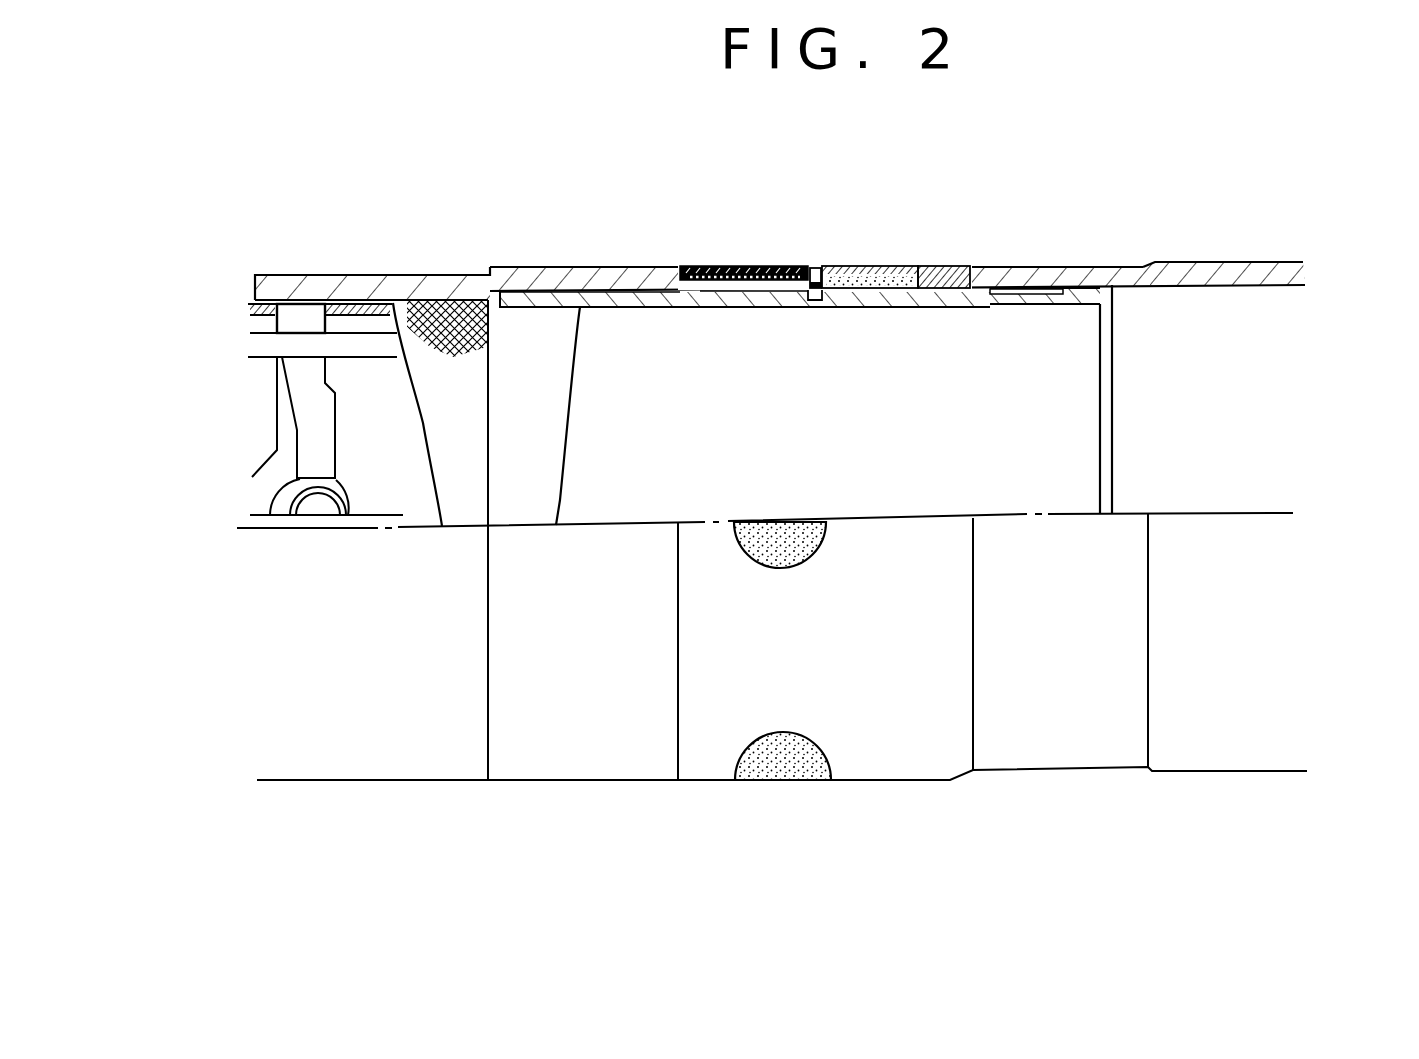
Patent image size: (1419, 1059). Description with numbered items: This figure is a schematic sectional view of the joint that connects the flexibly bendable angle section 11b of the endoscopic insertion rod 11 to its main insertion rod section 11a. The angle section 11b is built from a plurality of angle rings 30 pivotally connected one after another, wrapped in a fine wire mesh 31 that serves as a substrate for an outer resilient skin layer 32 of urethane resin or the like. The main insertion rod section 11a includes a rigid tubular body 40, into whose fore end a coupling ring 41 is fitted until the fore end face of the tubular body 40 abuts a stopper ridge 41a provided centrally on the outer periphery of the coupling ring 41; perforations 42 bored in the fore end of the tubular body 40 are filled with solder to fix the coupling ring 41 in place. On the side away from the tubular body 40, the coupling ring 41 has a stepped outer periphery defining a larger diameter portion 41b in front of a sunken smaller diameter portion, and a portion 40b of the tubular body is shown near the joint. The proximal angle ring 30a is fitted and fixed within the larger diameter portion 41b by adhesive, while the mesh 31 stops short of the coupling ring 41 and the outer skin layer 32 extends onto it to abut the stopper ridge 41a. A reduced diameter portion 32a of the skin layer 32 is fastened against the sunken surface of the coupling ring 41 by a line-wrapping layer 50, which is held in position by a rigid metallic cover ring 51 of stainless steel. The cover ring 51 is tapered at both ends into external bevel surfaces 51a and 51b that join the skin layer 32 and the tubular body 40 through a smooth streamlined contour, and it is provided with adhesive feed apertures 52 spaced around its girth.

The endoscopic insertion rod 11 is at (837, 196).
The main insertion rod section 11a is at (1181, 251).
The angle section 11b is at (422, 268).
The angle rings 30 is at (282, 350).
The angle ring in the proximal end position 30a is at (330, 300).
The wire mesh 31 is at (465, 305).
The outer resilient skin layer 32 is at (573, 345).
The reduced diameter portion 32a is at (757, 292).
The tubular body 40 is at (1134, 320).
The flange of case 40b is at (1083, 267).
The coupling ring 41 is at (748, 305).
The stopper ridge 41a is at (815, 292).
The larger diameter portion 41b is at (622, 296).
The perforations 42 is at (913, 264).
The line-wrapping layer 50 is at (860, 282).
The rigid metallic cover ring 51 is at (846, 266).
The external bevel surface 51a is at (680, 266).
The external bevel surface 51b is at (962, 264).
The adhesive feed apertures 52 is at (777, 264).